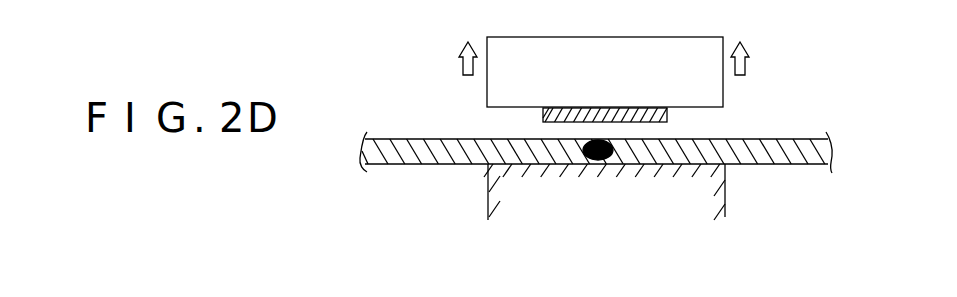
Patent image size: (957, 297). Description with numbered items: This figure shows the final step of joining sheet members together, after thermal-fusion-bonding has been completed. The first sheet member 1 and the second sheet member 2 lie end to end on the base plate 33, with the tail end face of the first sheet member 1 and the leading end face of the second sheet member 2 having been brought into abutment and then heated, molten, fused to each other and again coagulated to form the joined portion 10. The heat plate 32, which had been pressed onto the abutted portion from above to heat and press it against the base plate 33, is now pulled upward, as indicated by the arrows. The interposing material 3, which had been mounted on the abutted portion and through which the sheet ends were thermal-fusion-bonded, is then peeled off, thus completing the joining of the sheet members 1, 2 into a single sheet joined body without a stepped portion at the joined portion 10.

The first sheet member 1 is at (400, 149).
The second sheet member 2 is at (778, 149).
The interposing material 3 is at (543, 111).
The joined portion 10 is at (580, 163).
The heat plate 32 is at (616, 86).
The base plate 33 is at (619, 218).